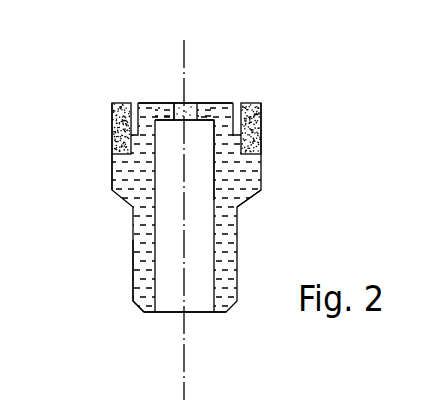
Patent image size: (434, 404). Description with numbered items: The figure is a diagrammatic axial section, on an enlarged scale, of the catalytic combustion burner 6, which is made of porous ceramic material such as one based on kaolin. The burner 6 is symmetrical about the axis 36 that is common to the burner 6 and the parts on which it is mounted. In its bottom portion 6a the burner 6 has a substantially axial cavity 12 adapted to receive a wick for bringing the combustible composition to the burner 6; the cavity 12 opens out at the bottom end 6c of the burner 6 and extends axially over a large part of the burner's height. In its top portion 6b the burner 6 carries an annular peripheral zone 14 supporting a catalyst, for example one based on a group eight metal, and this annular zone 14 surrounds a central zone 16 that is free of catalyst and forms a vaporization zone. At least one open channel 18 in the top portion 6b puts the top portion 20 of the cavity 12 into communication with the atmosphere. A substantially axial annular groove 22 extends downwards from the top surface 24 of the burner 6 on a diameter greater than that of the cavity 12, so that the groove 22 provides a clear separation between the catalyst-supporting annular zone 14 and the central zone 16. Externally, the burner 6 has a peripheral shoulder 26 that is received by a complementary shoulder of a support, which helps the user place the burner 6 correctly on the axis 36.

The catalytic combustion burner 6 is at (126, 240).
The bottom portion 6a is at (132, 280).
The top portion 6b is at (112, 170).
The bottom end 6c is at (143, 311).
The cavity 12 is at (193, 230).
The annular peripheral zone 14 is at (112, 142).
The central zone 16 is at (207, 103).
The open channel 18 is at (183, 103).
The top portion of the cavity 20 is at (200, 134).
The annular groove 22 is at (134, 134).
The top surface 24 is at (155, 103).
The peripheral shoulder 26 is at (237, 204).
The axis 36 is at (184, 41).